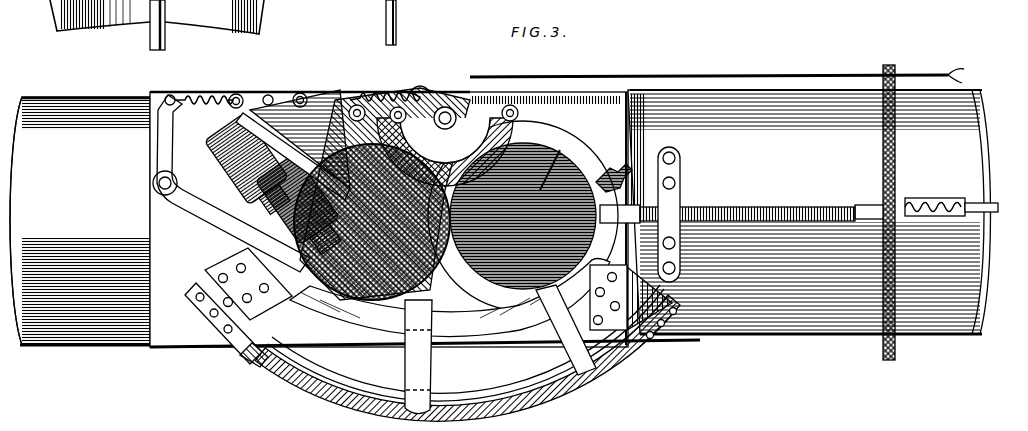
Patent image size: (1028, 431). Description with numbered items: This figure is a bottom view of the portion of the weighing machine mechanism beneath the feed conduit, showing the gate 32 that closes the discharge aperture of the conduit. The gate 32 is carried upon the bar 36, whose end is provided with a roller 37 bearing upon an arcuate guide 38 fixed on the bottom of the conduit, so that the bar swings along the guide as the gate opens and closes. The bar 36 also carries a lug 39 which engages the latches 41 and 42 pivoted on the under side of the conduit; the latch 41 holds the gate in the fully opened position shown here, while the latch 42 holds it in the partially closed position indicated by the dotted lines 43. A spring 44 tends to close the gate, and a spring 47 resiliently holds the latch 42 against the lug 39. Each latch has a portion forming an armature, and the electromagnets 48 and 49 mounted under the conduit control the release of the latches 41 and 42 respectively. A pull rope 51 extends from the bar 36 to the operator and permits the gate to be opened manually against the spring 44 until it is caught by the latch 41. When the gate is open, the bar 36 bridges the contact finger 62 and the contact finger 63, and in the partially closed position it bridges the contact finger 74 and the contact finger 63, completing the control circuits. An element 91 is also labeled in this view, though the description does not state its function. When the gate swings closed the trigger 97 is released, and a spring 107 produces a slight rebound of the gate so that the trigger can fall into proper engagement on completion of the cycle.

The gate 32 is at (376, 275).
The bar 36 is at (305, 328).
The roller 37 is at (240, 358).
The arcuate guide 38 is at (290, 381).
The lug 39 is at (215, 300).
The latch 41 is at (312, 306).
The latch 42 is at (590, 300).
The dotted lines 43 is at (560, 357).
The spring 44 is at (365, 96).
The spring 47 is at (212, 97).
The electromagnet 48 is at (240, 152).
The electromagnet 49 is at (302, 172).
The pull rope 51 is at (572, 77).
The contact finger 62 is at (360, 157).
The contact finger 63 is at (520, 170).
The contact finger 74 is at (440, 140).
The lever 91 is at (558, 153).
The trigger 97 is at (735, 207).
The spring 107 is at (606, 163).